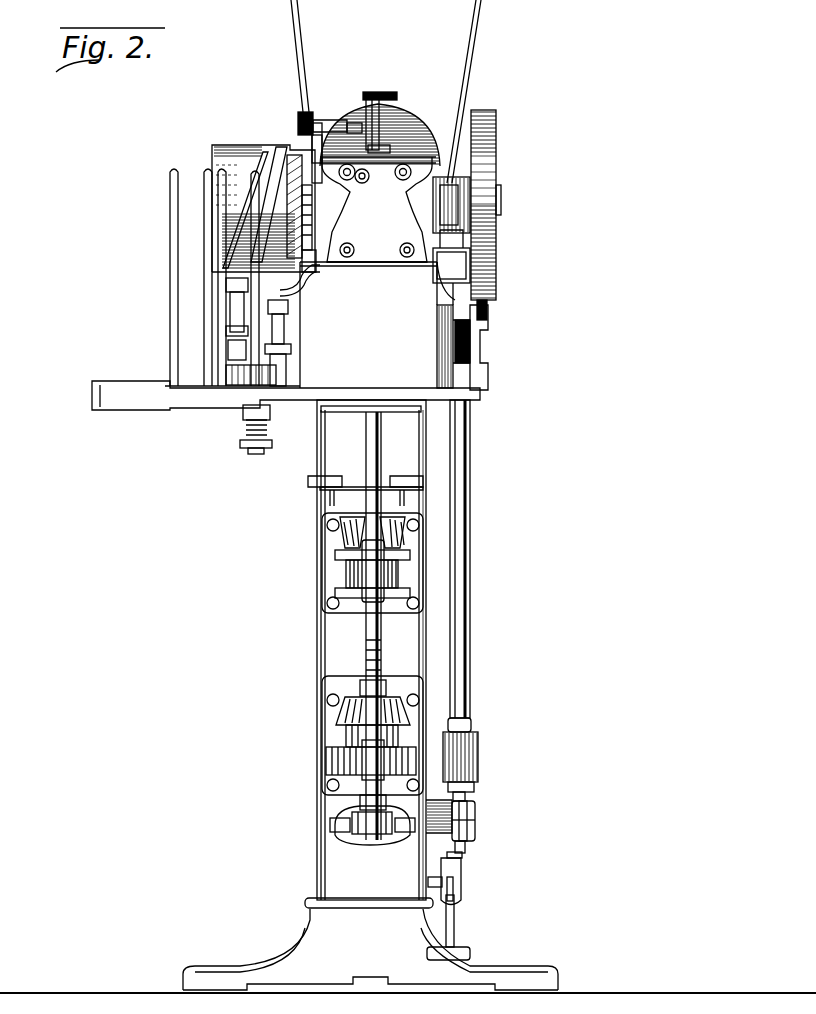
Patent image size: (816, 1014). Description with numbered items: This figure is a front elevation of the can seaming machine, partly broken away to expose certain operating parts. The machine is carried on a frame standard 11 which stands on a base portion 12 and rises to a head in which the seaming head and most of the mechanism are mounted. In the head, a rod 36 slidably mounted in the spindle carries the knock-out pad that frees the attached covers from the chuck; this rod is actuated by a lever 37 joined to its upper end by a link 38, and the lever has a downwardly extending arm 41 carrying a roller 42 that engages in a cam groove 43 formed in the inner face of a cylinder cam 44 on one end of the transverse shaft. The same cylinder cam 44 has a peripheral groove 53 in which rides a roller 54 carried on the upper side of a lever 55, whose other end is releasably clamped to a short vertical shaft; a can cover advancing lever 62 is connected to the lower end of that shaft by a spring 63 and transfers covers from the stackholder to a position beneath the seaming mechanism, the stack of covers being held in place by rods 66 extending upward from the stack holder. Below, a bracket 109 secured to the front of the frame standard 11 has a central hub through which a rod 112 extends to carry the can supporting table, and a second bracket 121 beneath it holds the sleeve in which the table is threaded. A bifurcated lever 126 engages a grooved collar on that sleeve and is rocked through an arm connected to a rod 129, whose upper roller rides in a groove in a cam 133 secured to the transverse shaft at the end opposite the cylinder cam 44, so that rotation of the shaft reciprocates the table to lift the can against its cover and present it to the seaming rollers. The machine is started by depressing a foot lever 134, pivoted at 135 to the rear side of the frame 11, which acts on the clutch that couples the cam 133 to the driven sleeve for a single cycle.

The frame standard 11 is at (326, 642).
The base portion 12 is at (512, 970).
The rod 36 is at (396, 118).
The lever 37 is at (323, 123).
The link 38 is at (369, 110).
The downwardly extending arm 41 is at (289, 152).
The roller 42 is at (304, 214).
The cam groove 43 is at (313, 266).
The cylinder cam 44 is at (226, 147).
The peripheral groove 53 is at (262, 147).
The roller 54 is at (235, 258).
The lever 55 is at (233, 296).
The can cover advancing lever 62 is at (224, 412).
The spring 63 is at (243, 438).
The rods 66 is at (171, 242).
The bracket 109 is at (332, 571).
The rod 112 is at (381, 637).
The bracket 121 is at (332, 729).
The bifurcated lever 126 is at (400, 841).
The rod 129 is at (470, 617).
The cam 133 is at (484, 163).
The foot lever 134 is at (456, 946).
The pivot 135 is at (462, 884).